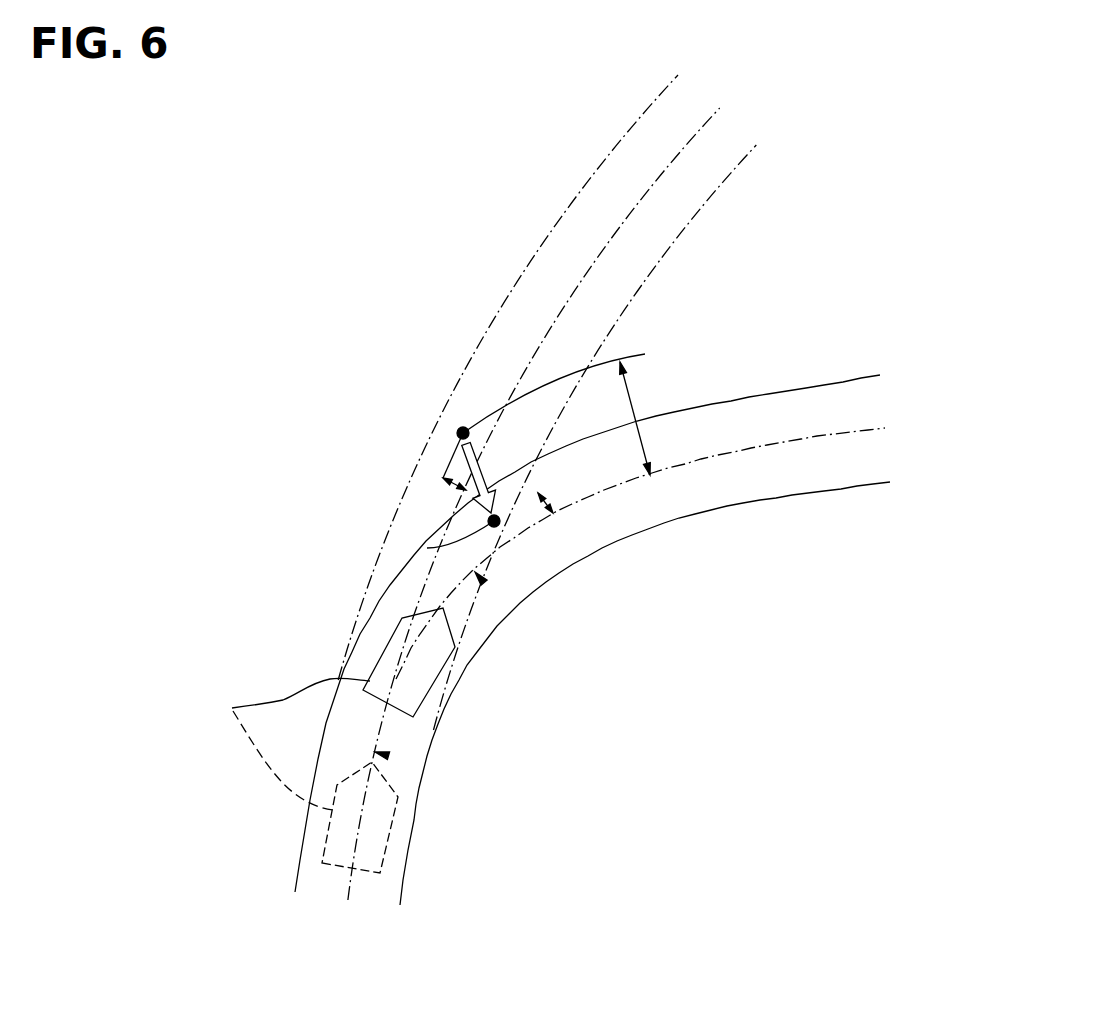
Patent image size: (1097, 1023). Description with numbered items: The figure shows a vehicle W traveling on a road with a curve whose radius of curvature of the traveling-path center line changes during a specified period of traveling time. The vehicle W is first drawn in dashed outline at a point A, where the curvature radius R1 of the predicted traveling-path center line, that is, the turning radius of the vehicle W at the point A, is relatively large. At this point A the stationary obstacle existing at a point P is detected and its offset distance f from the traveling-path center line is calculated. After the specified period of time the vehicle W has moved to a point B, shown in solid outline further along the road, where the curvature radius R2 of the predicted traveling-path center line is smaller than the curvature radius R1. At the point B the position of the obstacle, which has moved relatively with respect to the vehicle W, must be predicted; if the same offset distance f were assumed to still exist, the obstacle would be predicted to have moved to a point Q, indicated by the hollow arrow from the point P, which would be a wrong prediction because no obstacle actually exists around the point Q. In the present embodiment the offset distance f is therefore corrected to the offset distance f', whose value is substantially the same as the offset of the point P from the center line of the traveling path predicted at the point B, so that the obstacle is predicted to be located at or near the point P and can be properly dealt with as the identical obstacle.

The point P is at (463, 433).
The point Q is at (427, 548).
The offset distance f is at (499, 501).
The corrected offset distance f' is at (639, 418).
The point A is at (360, 810).
The point B is at (409, 648).
The vehicle W is at (287, 744).
The curvature radius R1 is at (375, 752).
The curvature radius R2 is at (475, 572).